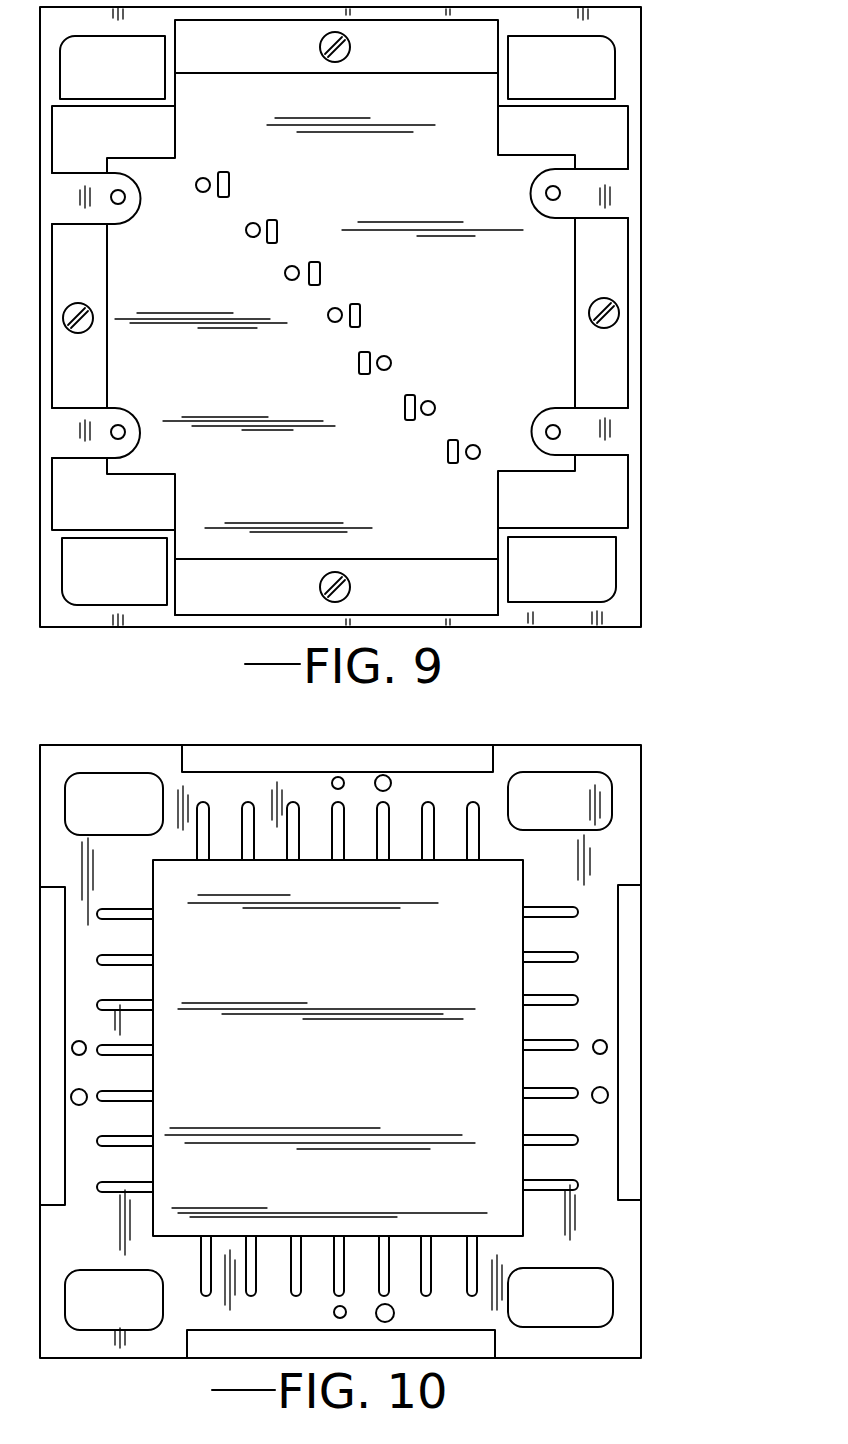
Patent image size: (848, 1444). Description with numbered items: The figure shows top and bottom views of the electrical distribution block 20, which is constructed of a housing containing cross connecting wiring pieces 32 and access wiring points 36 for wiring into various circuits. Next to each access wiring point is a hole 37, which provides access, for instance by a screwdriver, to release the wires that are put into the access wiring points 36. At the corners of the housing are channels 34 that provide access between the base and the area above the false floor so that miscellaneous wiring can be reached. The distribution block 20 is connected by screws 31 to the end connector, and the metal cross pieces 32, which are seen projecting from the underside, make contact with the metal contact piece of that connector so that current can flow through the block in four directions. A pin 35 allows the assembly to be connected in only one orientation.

In FIG. 9, the distribution block 20 is at (641, 527).
In FIG. 10, the distribution block 20 is at (641, 1028).
In FIG. 9, the screws 31 is at (607, 298).
In FIG. 10, the cross connecting wiring pieces 32 is at (578, 957).
In FIG. 9, the channel 34 is at (616, 54).
In FIG. 10, the channel 34 is at (588, 772).
In FIG. 10, the pin 35 is at (608, 1095).
In FIG. 9, the access wiring points 36 is at (428, 416).
In FIG. 9, the holes 37 is at (453, 438).